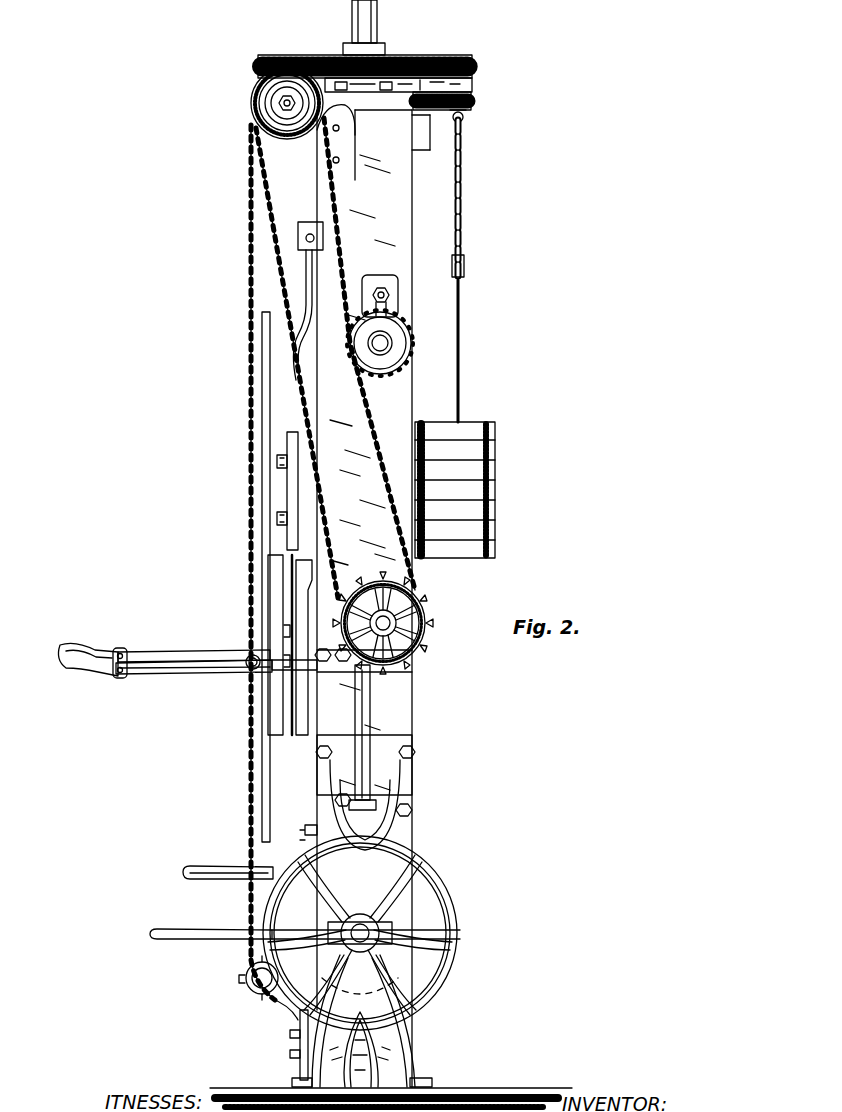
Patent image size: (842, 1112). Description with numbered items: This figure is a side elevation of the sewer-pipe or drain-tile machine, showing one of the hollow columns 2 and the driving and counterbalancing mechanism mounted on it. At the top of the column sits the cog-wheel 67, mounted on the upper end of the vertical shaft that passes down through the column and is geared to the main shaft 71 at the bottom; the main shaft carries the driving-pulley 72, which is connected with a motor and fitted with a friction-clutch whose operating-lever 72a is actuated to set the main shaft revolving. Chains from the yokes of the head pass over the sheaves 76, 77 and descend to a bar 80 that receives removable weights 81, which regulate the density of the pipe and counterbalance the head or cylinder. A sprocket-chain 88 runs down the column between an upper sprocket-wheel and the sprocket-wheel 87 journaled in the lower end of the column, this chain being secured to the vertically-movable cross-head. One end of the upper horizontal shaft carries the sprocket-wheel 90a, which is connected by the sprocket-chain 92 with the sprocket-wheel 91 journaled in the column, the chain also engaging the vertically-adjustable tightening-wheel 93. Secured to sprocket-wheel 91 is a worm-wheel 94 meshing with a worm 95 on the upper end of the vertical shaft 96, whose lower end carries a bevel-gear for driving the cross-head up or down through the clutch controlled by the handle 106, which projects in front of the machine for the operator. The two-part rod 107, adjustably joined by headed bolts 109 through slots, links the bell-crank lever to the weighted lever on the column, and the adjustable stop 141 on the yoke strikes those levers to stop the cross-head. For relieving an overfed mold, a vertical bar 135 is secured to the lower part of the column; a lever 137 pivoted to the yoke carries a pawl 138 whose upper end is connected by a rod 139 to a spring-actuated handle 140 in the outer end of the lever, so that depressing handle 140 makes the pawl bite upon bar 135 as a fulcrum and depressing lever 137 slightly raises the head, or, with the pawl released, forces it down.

The column 2 is at (391, 553).
The cog-wheel 67 is at (445, 58).
The sheave 76 is at (460, 80).
The sheave 77 is at (463, 123).
The sprocket-wheel 90a is at (283, 103).
The sprocket-chain 88 is at (251, 272).
The sprocket-chain 92 is at (318, 480).
The tightening-wheel 93 is at (395, 343).
The bar 80 is at (471, 271).
The weight 81 is at (476, 467).
The vertical bar 135 is at (265, 367).
The two-part rod 107 is at (290, 492).
The headed bolt 109 is at (280, 461).
The adjustable stop 141 is at (280, 587).
The lever 137 is at (194, 679).
The rod 139 is at (194, 646).
The pawl 138 is at (232, 677).
The spring-actuated handle 140 is at (92, 650).
The worm-wheel 94 is at (398, 618).
The worm 95 is at (385, 580).
The sprocket-wheel 91 is at (415, 654).
The vertical shaft 96 is at (366, 718).
The handle 106 is at (228, 862).
The operating-lever 72a is at (211, 914).
The driving-pulley 72 is at (369, 933).
The main shaft 71 is at (456, 932).
The sprocket-wheel 87 is at (250, 978).